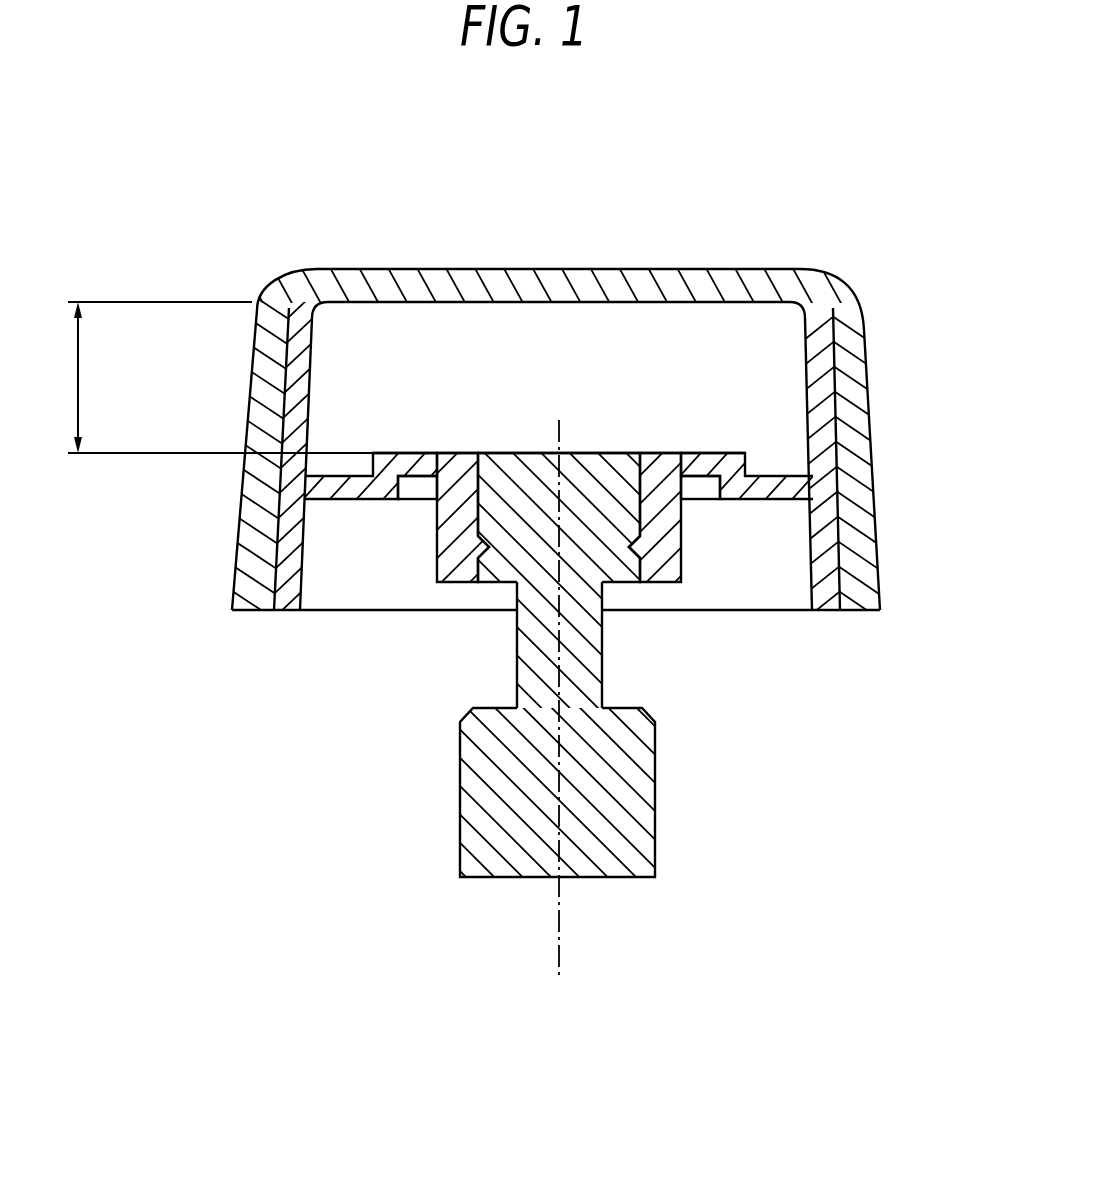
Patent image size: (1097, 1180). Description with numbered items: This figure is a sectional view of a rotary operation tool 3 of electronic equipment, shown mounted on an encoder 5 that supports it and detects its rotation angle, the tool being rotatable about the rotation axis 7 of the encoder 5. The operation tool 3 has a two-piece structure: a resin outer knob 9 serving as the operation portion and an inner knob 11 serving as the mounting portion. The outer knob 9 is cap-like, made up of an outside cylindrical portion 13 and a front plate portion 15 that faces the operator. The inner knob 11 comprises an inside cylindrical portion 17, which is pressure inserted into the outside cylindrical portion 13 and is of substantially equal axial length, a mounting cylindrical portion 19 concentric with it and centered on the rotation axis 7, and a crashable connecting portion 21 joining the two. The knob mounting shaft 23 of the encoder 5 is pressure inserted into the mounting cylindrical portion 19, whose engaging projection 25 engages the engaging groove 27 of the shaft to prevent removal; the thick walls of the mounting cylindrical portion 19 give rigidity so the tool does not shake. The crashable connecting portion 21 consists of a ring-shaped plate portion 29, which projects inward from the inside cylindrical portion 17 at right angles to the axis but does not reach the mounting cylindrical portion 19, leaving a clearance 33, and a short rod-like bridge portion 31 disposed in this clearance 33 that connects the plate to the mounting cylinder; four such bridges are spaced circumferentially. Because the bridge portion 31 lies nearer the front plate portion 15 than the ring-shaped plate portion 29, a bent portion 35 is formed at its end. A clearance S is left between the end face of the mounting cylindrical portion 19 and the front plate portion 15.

The operation tool 3 is at (211, 179).
The encoder 5 is at (420, 897).
The rotation axis 7 is at (558, 928).
The outer knob 9 is at (226, 523).
The inner knob 11 is at (281, 623).
The outside cylindrical portion 13 is at (251, 376).
The front plate portion 15 is at (390, 268).
The inside cylindrical portion 17 is at (302, 565).
The mounting cylindrical portion 19 is at (450, 583).
The crashable connecting portion 21 is at (725, 408).
The knob mounting shaft 23 is at (612, 560).
The engaging projection 25 is at (627, 560).
The engaging groove 27 is at (667, 583).
The ring-shaped plate portion 29 is at (778, 477).
The bridge portion 31 is at (692, 453).
The clearance 33 is at (700, 493).
The bent portion 35 is at (753, 437).